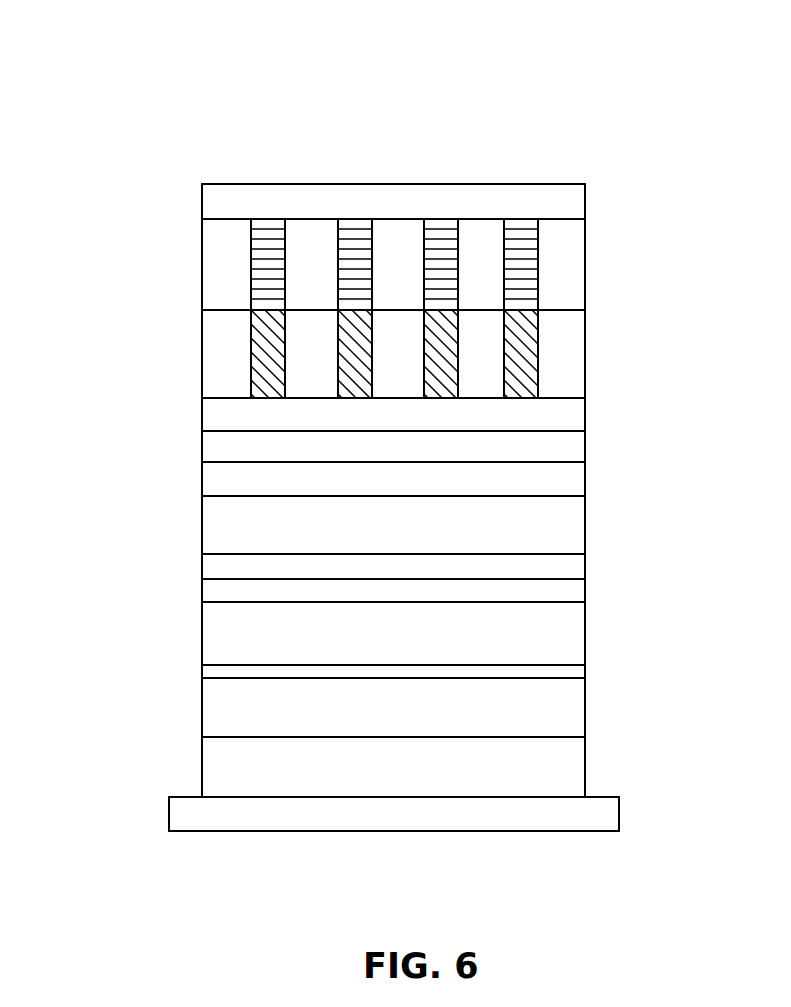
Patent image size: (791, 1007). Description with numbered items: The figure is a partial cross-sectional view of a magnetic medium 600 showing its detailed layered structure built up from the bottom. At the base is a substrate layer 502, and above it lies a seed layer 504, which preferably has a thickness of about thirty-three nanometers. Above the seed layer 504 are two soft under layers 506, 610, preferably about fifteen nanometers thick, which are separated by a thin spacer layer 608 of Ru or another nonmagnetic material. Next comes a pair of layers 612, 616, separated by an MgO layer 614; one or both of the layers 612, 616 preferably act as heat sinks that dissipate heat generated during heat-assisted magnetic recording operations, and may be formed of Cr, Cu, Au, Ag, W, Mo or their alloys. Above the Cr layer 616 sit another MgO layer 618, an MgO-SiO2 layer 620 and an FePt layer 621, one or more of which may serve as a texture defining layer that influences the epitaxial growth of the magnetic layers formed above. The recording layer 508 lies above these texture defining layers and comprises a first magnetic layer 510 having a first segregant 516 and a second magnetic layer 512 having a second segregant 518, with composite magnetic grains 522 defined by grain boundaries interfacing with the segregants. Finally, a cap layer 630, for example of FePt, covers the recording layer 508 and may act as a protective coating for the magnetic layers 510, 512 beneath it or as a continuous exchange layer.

The magnetic medium 600 is at (86, 110).
The cap layer 630 is at (586, 197).
The composite magnetic grains 522 is at (478, 204).
The recording layer 508 is at (100, 400).
The second magnetic layer 512 is at (598, 218).
The first magnetic layer 510 is at (598, 312).
The second segregant 518 is at (251, 253).
The first segregant 516 is at (251, 360).
The FePt layer 621 is at (586, 413).
The MgO-SiO2 layer 620 is at (201, 443).
The MgO layer 618 is at (586, 483).
The Cr layer 616 is at (586, 537).
The MgO layer 614 is at (201, 565).
The heat sink layer 612 is at (586, 593).
The soft under layer 610 is at (201, 632).
The spacer layer 608 is at (201, 675).
The soft under layer 506 is at (586, 715).
The seed layer 504 is at (586, 770).
The substrate layer 502 is at (169, 815).